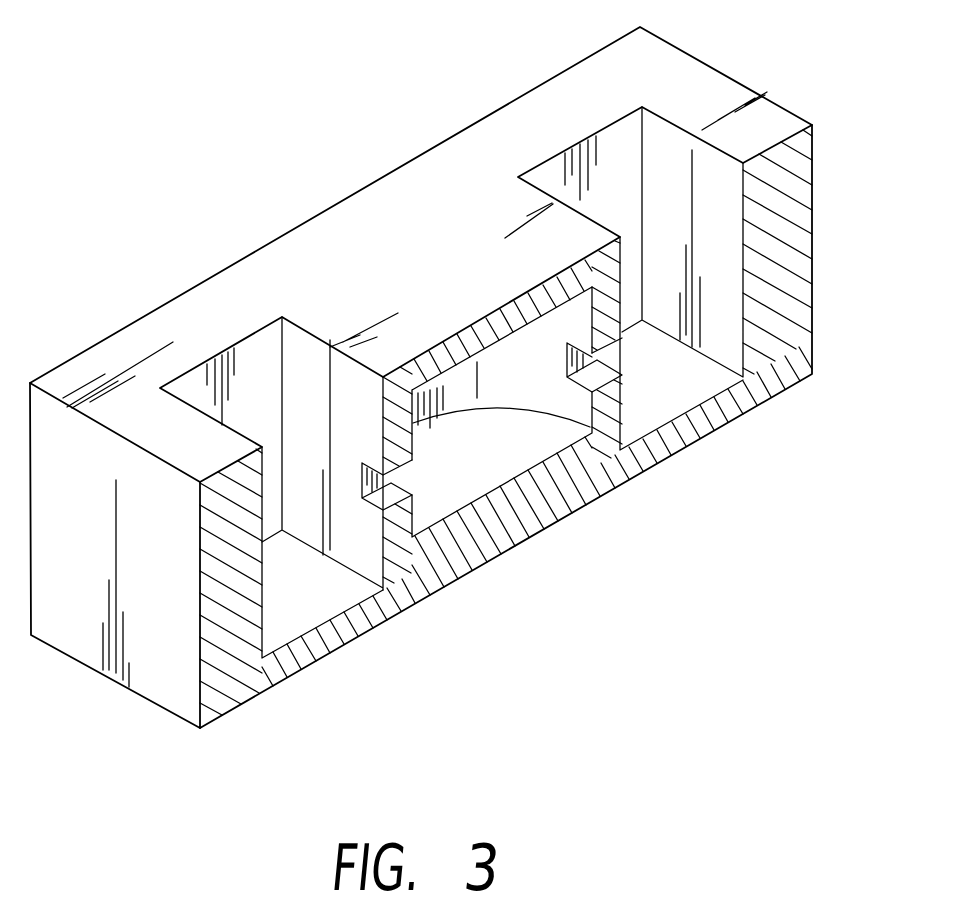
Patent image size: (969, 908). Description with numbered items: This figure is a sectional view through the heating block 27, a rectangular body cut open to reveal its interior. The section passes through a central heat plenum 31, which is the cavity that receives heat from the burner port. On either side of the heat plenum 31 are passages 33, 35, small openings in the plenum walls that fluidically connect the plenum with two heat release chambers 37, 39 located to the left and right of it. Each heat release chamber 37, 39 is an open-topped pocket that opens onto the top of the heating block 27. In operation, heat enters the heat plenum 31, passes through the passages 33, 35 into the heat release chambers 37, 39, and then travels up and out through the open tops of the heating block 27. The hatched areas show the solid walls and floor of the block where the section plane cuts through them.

The heating block 27 is at (319, 173).
The heat plenum 31 is at (518, 473).
The passage 33 is at (378, 512).
The passage 35 is at (605, 368).
The heat release chamber 37 is at (265, 628).
The heat release chamber 39 is at (745, 262).